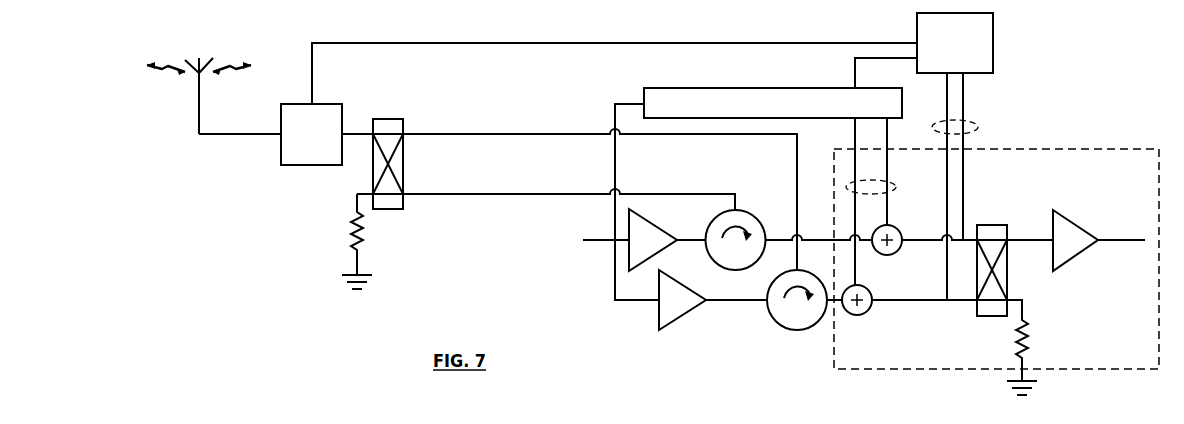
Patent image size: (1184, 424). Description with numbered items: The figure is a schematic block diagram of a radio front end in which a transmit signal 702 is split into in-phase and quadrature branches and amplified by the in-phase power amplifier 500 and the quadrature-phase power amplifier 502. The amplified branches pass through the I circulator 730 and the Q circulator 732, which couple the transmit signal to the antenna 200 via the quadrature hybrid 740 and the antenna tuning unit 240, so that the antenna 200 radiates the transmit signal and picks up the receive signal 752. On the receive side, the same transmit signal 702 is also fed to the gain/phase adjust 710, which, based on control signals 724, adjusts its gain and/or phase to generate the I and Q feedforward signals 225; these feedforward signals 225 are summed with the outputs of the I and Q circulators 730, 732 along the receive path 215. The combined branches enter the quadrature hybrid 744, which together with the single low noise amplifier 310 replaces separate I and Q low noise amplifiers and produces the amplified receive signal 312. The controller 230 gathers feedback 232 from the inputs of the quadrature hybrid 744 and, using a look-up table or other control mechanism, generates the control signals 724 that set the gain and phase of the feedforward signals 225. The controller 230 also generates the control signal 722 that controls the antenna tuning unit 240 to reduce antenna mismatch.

The antenna 200 is at (206, 150).
The transmit/receive signal at antenna 752 is at (188, 53).
The antenna tuning unit 240 is at (327, 134).
The control signal 722 is at (605, 44).
The quadrature hybrid 740 is at (388, 226).
The transmit signal 702 is at (564, 243).
The gain/phase adjust 710 is at (758, 194).
The control signals 724 is at (855, 60).
The controller 230 is at (955, 156).
The feedback 232 is at (976, 127).
The I and Q feedforward signals 225 is at (895, 187).
The in-phase power amplifier 500 is at (667, 240).
The quadrature-phase power amplifier 502 is at (713, 300).
The I circulator 730 is at (842, 240).
The Q circulator 732 is at (872, 300).
The receive path 215 is at (1143, 328).
The quadrature hybrid 744 is at (993, 201).
The low noise amplifier 310 is at (1075, 240).
The receive signal 312 is at (1119, 198).